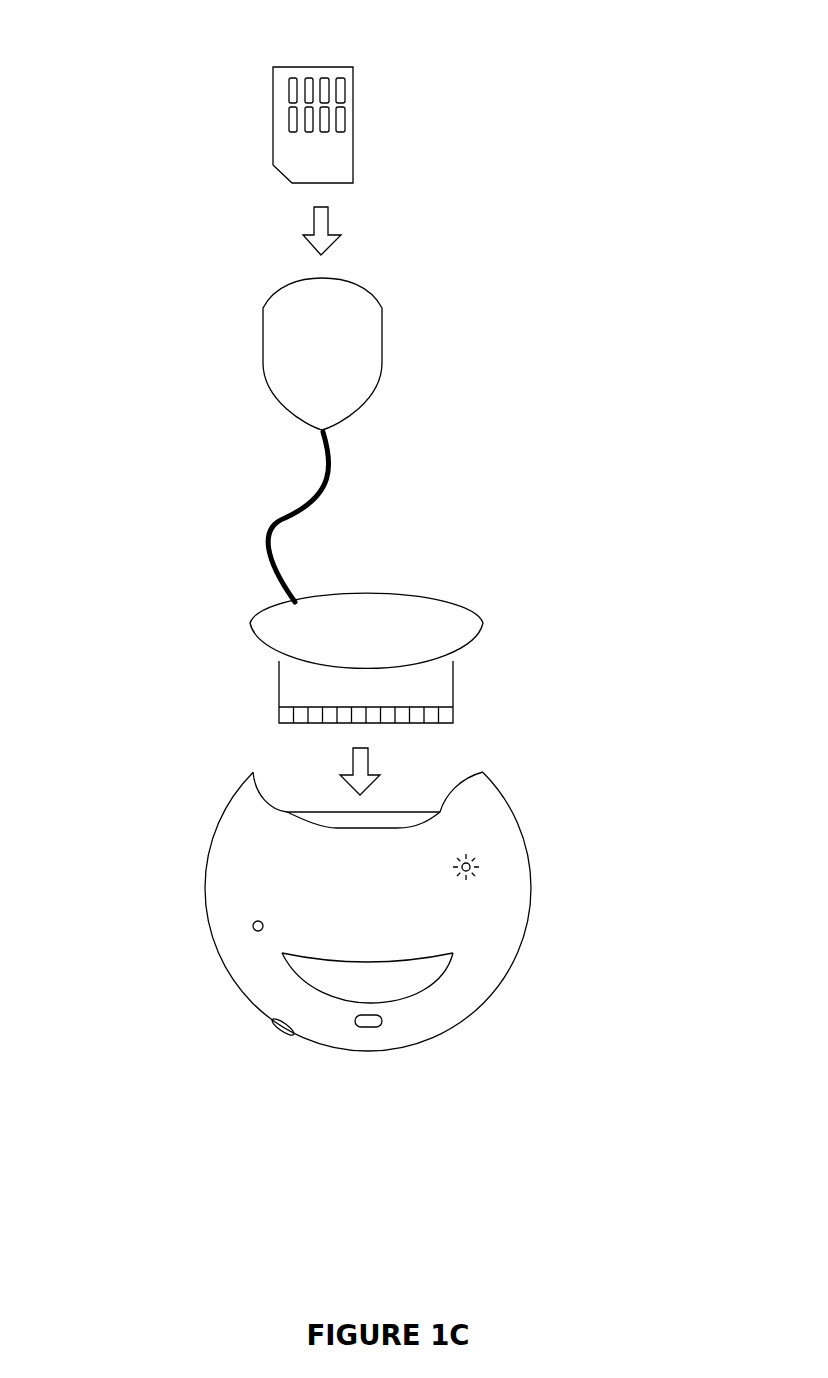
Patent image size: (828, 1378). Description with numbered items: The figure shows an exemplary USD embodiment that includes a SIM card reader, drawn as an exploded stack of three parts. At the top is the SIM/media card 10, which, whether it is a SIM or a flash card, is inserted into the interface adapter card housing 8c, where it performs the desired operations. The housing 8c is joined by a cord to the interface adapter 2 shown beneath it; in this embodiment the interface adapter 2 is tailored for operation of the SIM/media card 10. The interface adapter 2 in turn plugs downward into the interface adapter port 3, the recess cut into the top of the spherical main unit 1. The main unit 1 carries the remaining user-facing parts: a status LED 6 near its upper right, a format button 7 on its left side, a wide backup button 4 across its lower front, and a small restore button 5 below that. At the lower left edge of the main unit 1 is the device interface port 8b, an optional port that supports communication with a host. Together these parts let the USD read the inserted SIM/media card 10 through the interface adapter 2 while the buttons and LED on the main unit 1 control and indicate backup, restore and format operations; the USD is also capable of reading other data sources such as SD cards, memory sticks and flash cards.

The SIM/media card 10 is at (353, 86).
The interface adapter card housing 8c is at (382, 357).
The interface adapter 2 is at (483, 625).
The interface adapter port 3 is at (483, 772).
The main unit 1 is at (223, 808).
The status LED 6 is at (470, 848).
The format button 7 is at (253, 926).
The backup button 4 is at (447, 970).
The restore button 5 is at (382, 1022).
The device interface port 8b is at (268, 1023).